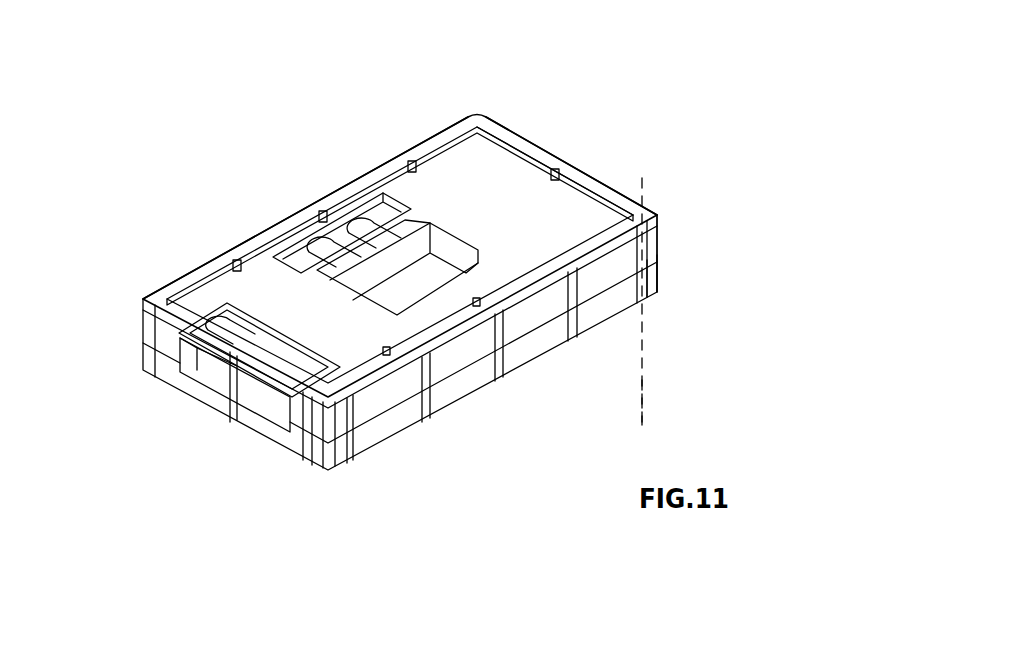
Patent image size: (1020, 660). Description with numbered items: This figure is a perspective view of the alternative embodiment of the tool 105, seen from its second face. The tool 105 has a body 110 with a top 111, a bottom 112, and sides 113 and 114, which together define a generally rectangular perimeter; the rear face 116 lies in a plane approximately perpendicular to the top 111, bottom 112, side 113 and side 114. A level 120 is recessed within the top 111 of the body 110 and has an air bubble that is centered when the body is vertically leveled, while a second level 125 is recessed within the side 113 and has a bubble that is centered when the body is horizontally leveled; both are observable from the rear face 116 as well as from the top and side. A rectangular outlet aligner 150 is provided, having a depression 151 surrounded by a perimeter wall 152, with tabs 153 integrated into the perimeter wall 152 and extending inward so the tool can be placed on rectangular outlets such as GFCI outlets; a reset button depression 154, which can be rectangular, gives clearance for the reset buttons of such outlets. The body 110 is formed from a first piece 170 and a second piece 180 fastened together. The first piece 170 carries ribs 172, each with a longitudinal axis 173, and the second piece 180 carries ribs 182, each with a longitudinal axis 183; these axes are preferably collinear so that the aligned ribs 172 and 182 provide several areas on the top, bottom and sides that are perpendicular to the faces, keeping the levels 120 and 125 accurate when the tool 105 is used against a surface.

The tool 105 is at (140, 120).
The body 110 is at (255, 233).
The top 111 is at (287, 440).
The bottom 112 is at (600, 197).
The side 113 is at (195, 268).
The side 114 is at (530, 340).
The rear face 116 is at (530, 210).
The level 120 is at (228, 380).
The second level 125 is at (343, 240).
The rectangular outlet aligner 150 is at (490, 150).
The depression 151 is at (512, 177).
The perimeter wall 152 is at (453, 143).
The tabs 153 is at (377, 160).
The reset button depression 154 is at (432, 288).
The first piece 170 is at (653, 297).
The ribs 172 is at (659, 283).
The longitudinal axis 173 is at (643, 395).
The second piece 180 is at (660, 237).
The ribs 182 is at (658, 226).
The longitudinal axis 183 is at (643, 186).